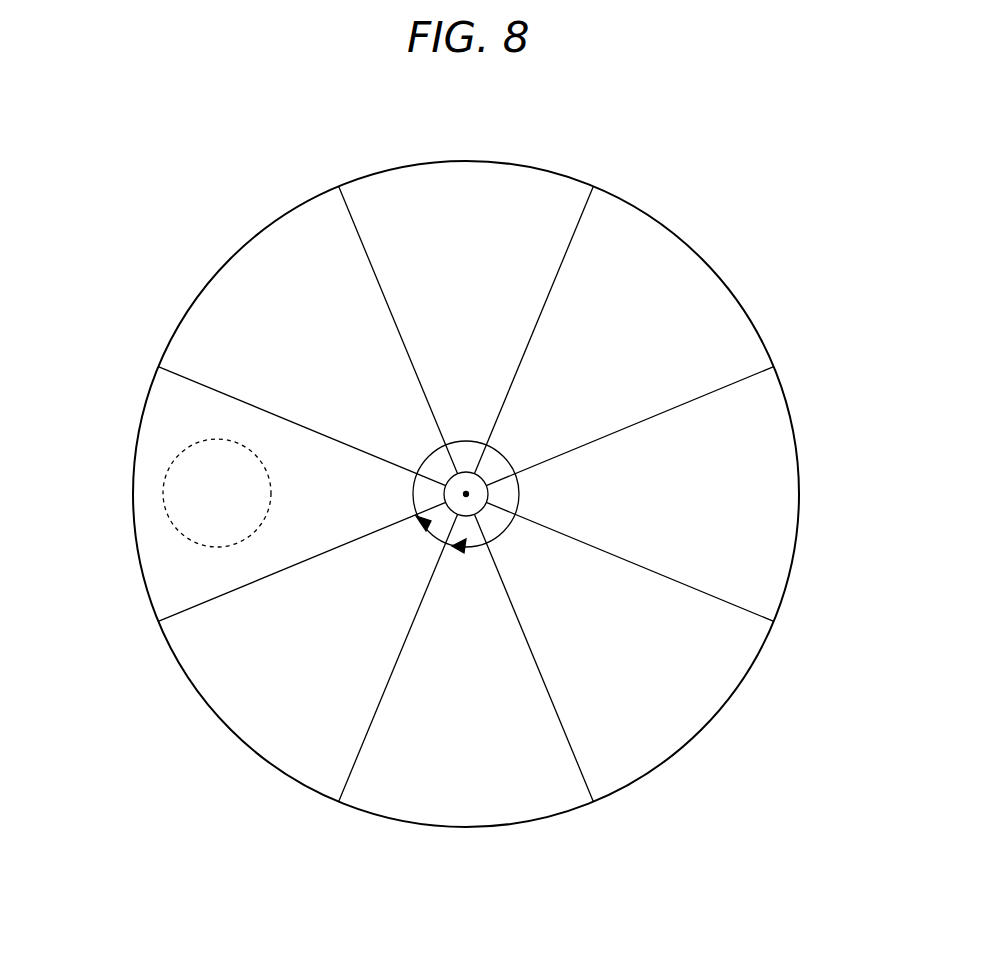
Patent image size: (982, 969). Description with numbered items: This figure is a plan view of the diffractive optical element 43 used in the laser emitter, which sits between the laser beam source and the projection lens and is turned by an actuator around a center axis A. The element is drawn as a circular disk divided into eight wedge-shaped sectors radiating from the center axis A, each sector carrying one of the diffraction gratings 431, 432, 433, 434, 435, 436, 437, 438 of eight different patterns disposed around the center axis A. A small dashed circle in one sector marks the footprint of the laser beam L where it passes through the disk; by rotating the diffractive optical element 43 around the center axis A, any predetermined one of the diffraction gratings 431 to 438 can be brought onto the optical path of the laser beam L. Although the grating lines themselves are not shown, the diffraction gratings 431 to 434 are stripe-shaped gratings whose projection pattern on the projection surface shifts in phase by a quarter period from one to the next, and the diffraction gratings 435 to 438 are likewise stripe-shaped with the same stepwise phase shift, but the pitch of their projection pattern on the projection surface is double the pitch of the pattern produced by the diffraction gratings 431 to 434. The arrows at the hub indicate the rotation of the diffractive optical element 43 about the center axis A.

The diffractive optical element 43 is at (712, 250).
The diffraction grating 431 is at (783, 491).
The diffraction grating 432 is at (683, 718).
The diffraction grating 433 is at (546, 805).
The diffraction grating 434 is at (255, 705).
The diffraction grating 435 is at (163, 420).
The diffraction grating 436 is at (236, 292).
The diffraction grating 437 is at (455, 178).
The diffraction grating 438 is at (641, 240).
The laser beam L is at (190, 508).
The center axis A is at (466, 497).